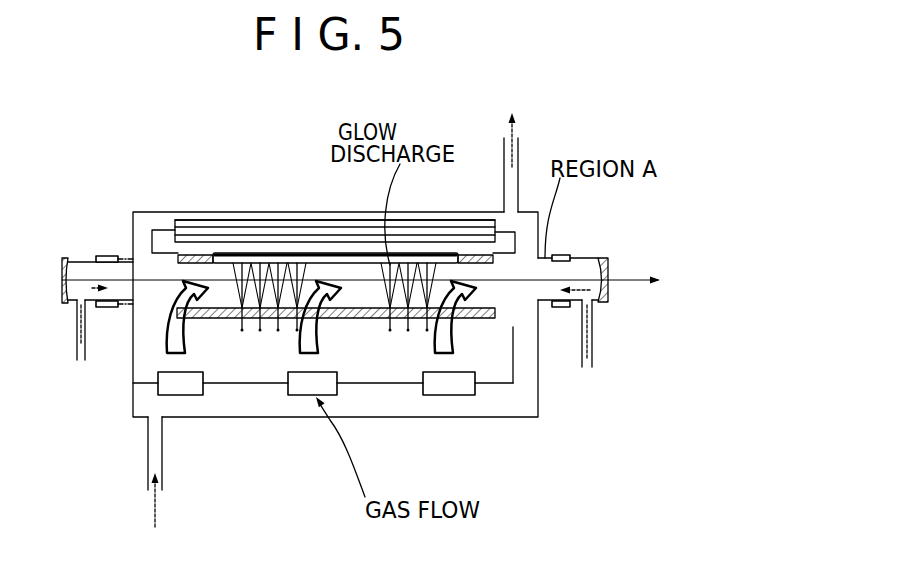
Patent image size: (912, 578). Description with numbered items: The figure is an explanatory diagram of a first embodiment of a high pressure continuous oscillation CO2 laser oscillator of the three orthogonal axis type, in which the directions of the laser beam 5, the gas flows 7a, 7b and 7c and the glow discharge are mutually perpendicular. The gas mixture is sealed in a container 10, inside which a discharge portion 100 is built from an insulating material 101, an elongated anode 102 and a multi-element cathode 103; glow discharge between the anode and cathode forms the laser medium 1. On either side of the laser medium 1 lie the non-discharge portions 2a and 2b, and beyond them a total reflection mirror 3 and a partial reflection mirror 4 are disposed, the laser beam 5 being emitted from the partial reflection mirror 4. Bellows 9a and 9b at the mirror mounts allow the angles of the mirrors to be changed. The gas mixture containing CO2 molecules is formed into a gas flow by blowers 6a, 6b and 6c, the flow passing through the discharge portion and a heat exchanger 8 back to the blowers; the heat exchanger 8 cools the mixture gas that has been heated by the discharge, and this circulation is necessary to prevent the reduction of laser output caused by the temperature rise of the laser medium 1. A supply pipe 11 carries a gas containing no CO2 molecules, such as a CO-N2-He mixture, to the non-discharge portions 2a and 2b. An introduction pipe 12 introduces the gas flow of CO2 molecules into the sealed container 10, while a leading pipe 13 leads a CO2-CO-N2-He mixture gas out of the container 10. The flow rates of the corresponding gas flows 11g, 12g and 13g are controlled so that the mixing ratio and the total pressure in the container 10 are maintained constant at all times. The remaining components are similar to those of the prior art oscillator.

The laser medium 1 is at (497, 302).
The non-discharge portion 2a is at (118, 308).
The non-discharge portion 2b is at (557, 308).
The total reflection mirror 3 is at (62, 257).
The partial reflection mirror 4 is at (605, 258).
The laser beam 5 is at (633, 283).
The blower 6a is at (198, 394).
The blower 6b is at (330, 395).
The blower 6c is at (470, 395).
The gas flow 7a is at (182, 333).
The gas flow 7b is at (317, 337).
The gas flow 7c is at (450, 337).
The heat exchanger 8 is at (190, 221).
The bellows 9a is at (108, 256).
The bellows 9b is at (560, 255).
The container 10 is at (538, 403).
The supply pipe 11 is at (77, 330).
The gas flow 11g is at (590, 320).
The introduction pipe 12 is at (162, 463).
The gas flow 12g is at (155, 513).
The leading pipe 13 is at (520, 150).
The gas flow 13g is at (516, 130).
The discharge portion 100 is at (152, 250).
The insulating material 101 is at (229, 326).
The elongated anode 102 is at (297, 252).
The multi-element cathode 103 is at (403, 336).